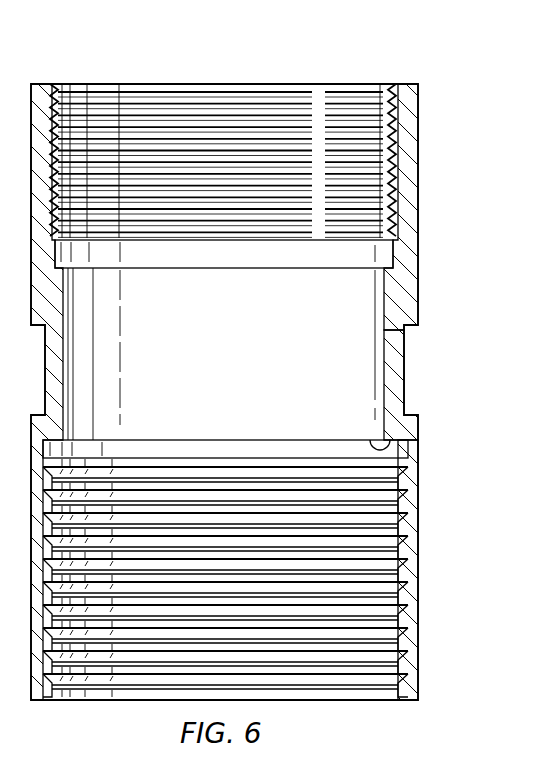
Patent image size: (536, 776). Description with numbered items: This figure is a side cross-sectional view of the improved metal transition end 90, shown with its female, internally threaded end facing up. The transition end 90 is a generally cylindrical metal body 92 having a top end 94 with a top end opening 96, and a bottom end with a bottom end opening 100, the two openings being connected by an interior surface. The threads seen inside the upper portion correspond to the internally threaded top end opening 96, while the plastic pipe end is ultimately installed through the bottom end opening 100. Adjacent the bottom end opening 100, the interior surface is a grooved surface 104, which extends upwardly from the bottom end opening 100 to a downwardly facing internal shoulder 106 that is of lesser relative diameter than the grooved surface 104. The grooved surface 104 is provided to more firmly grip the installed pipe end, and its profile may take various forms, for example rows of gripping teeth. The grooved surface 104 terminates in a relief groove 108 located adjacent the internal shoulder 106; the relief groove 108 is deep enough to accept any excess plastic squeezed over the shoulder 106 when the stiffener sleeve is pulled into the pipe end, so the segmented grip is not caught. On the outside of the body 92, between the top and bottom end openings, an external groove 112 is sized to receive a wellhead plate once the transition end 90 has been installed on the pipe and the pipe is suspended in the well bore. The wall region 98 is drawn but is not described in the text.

The metal transition end 90 is at (271, 393).
The generally cylindrical metal body 92 is at (263, 570).
The top end 94 is at (261, 176).
The top end opening 96 is at (180, 73).
The lower body wall 98 is at (418, 590).
The bottom end opening 100 is at (263, 583).
The grooved surface 104 is at (395, 667).
The downwardly facing internal shoulder 106 is at (374, 440).
The relief groove 108 is at (232, 440).
The external groove 112 is at (404, 363).